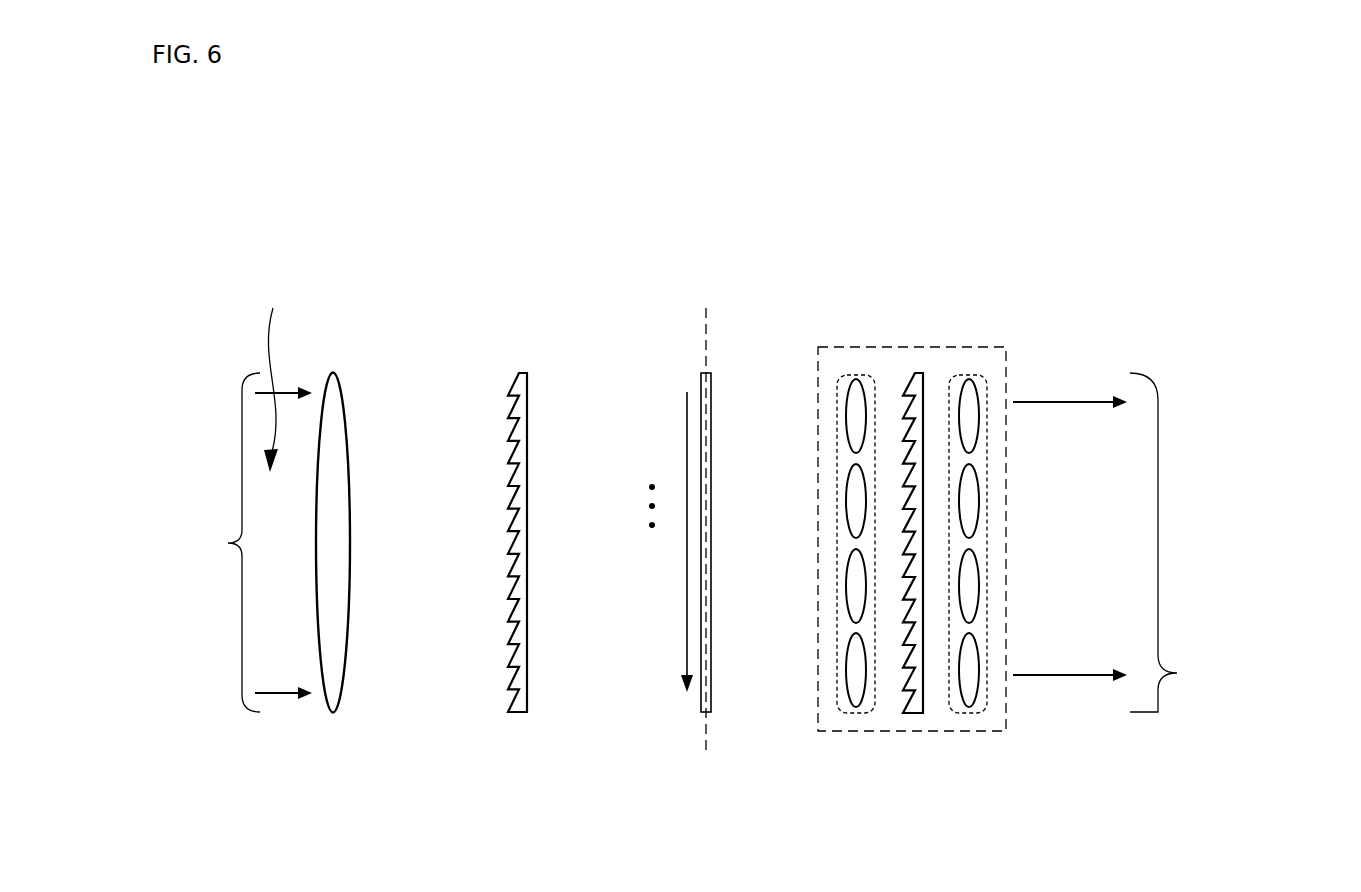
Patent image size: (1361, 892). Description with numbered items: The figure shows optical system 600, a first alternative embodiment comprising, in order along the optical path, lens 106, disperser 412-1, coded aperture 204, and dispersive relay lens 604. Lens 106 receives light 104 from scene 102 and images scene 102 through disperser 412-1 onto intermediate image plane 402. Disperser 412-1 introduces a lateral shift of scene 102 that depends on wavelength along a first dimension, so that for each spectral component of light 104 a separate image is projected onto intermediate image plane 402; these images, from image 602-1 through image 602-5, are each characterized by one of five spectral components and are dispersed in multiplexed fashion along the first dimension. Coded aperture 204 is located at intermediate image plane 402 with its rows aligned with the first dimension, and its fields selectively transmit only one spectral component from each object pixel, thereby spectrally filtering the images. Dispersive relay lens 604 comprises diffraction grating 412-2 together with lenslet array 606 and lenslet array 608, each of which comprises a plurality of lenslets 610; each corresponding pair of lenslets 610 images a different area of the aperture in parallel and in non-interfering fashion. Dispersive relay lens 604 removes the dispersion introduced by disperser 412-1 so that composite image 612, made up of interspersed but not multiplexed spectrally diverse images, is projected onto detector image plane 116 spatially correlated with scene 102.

The optical system 600 is at (300, 150).
The scene 102 is at (234, 542).
The light 104 is at (284, 377).
The lens 106 is at (334, 713).
The disperser 412-1 is at (510, 372).
The intermediate image plane 402 is at (706, 348).
The coded aperture 204 is at (701, 703).
The image 602-1 is at (654, 466).
The image 602-5 is at (657, 616).
The dispersive relay lens 604 is at (905, 731).
The lenslet array 606 is at (858, 375).
The diffraction grating 412-2 is at (912, 373).
The lenslet array 608 is at (983, 533).
The lenslet 610 is at (970, 685).
The composite image 612 is at (1088, 550).
The detector image plane 116 is at (1213, 571).